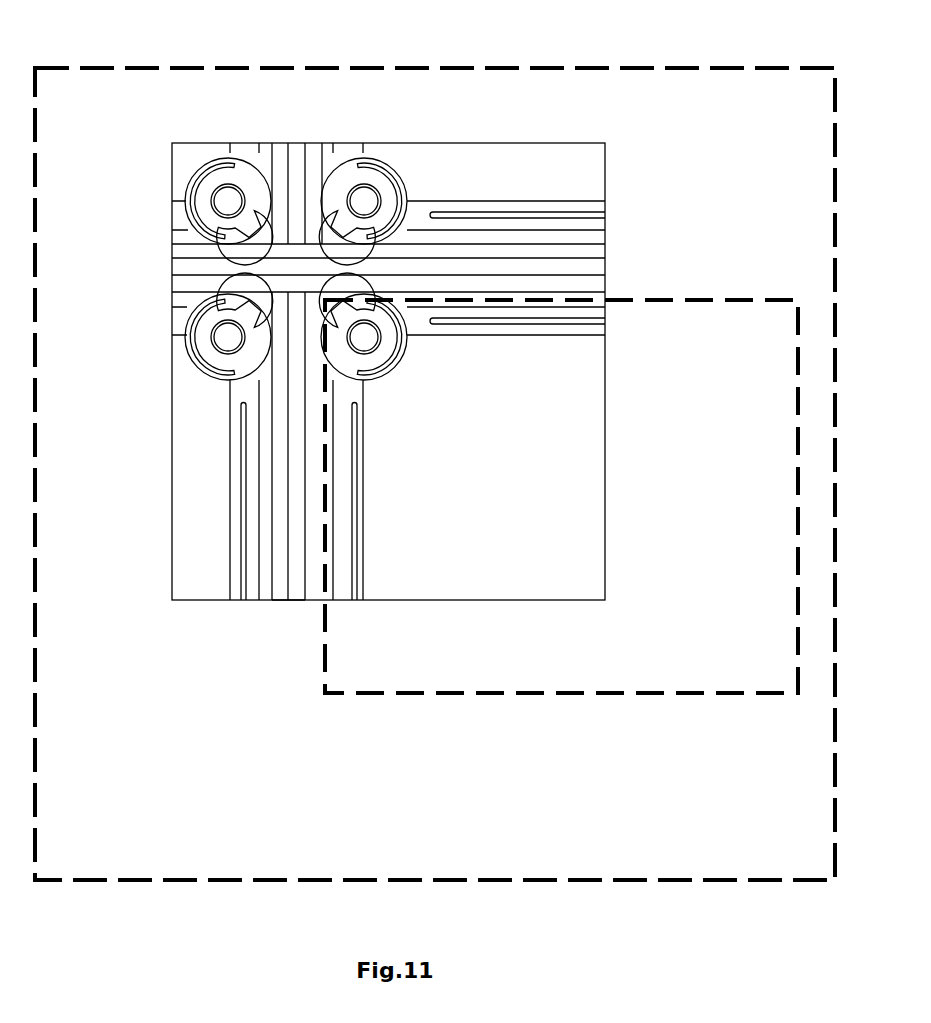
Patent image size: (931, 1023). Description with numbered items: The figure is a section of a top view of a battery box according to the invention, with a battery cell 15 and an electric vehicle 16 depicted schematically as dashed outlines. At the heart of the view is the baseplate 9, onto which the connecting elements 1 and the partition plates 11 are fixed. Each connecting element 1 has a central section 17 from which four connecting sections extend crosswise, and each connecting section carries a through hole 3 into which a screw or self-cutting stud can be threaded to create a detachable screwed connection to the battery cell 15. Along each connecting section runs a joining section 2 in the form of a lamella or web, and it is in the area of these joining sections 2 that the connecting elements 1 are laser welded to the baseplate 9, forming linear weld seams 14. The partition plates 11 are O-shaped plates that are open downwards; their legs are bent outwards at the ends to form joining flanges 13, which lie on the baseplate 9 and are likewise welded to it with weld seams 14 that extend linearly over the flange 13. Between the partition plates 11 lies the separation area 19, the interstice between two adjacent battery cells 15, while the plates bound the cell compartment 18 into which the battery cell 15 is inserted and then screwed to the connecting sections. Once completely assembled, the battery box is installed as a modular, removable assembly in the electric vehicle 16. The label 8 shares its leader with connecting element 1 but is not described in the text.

The connecting element 1 is at (248, 311).
The joining section 2 is at (383, 166).
The through hole 3 is at (228, 201).
The rotary member 8 is at (187, 326).
The baseplate 9 is at (565, 480).
The partition plate 11 is at (297, 222).
The joining flange 13 is at (177, 223).
The weld seam 14 is at (398, 180).
The battery cell 15 is at (505, 695).
The electric vehicle 16 is at (574, 882).
The central section 17 is at (288, 272).
The cell compartment 18 is at (426, 556).
The separation area 19 is at (285, 603).